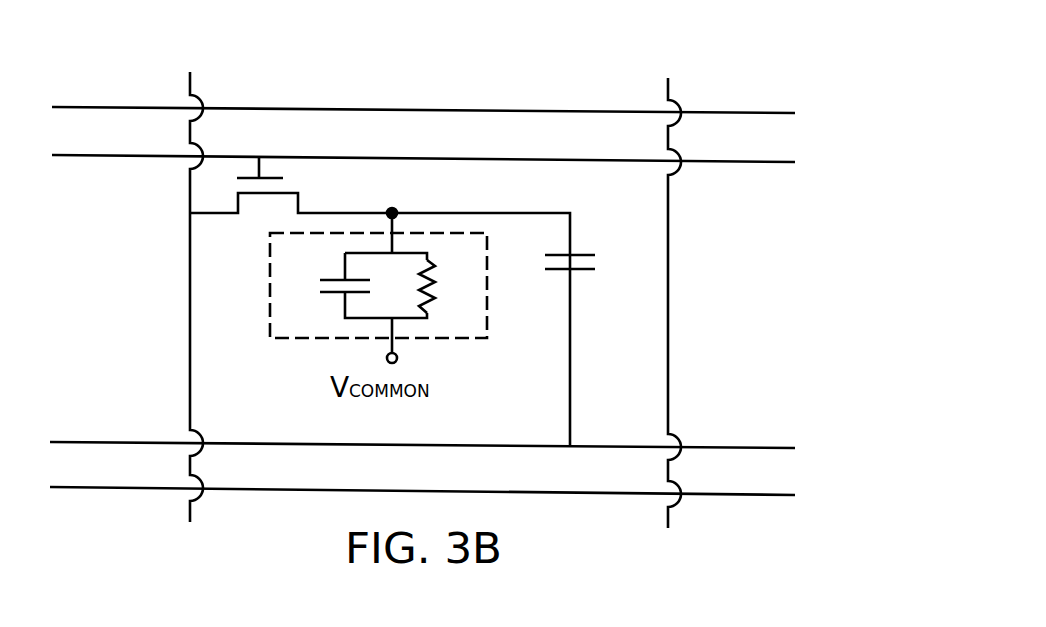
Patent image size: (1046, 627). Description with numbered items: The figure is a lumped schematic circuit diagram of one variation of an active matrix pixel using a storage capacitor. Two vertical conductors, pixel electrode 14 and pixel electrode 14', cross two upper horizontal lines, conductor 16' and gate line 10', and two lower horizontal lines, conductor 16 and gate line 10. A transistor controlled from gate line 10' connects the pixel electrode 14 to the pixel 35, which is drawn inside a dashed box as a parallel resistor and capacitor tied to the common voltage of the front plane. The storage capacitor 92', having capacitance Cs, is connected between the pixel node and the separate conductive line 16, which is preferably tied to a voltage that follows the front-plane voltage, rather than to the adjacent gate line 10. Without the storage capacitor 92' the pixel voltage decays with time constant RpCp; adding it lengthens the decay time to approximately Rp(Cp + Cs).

The pixel electrode 14 is at (211, 275).
The pixel electrode 14' is at (691, 280).
The conductor 16' is at (423, 96).
The gate line 10' is at (440, 146).
The conductor 16 is at (422, 430).
The gate line 10 is at (425, 477).
The storage capacitor 92' is at (600, 240).
The pixel 35 is at (270, 240).